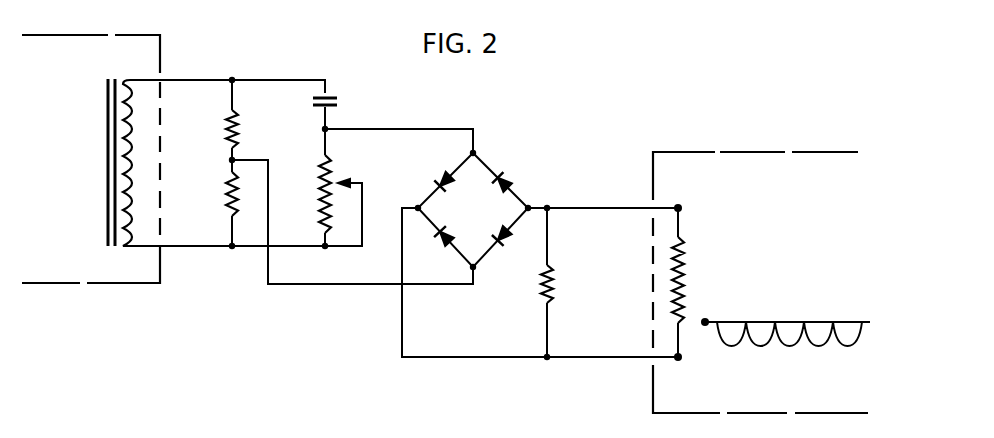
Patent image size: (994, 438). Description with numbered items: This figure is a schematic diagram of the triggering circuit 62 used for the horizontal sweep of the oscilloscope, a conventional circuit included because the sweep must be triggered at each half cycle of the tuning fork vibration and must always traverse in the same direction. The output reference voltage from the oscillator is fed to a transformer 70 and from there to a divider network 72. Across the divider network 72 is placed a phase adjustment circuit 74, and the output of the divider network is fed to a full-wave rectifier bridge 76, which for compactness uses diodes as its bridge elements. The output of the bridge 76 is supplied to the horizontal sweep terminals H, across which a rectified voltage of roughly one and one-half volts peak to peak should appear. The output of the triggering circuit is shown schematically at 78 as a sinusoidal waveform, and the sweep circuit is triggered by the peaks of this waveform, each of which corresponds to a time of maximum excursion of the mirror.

The power supply circuit 62 is at (310, 316).
The transformer 70 is at (126, 176).
The divider network 72 is at (234, 159).
The phase adjustment circuit 74 is at (333, 173).
The full-wave rectifier bridge 76 is at (510, 164).
The output of the triggering circuit 78 is at (776, 313).